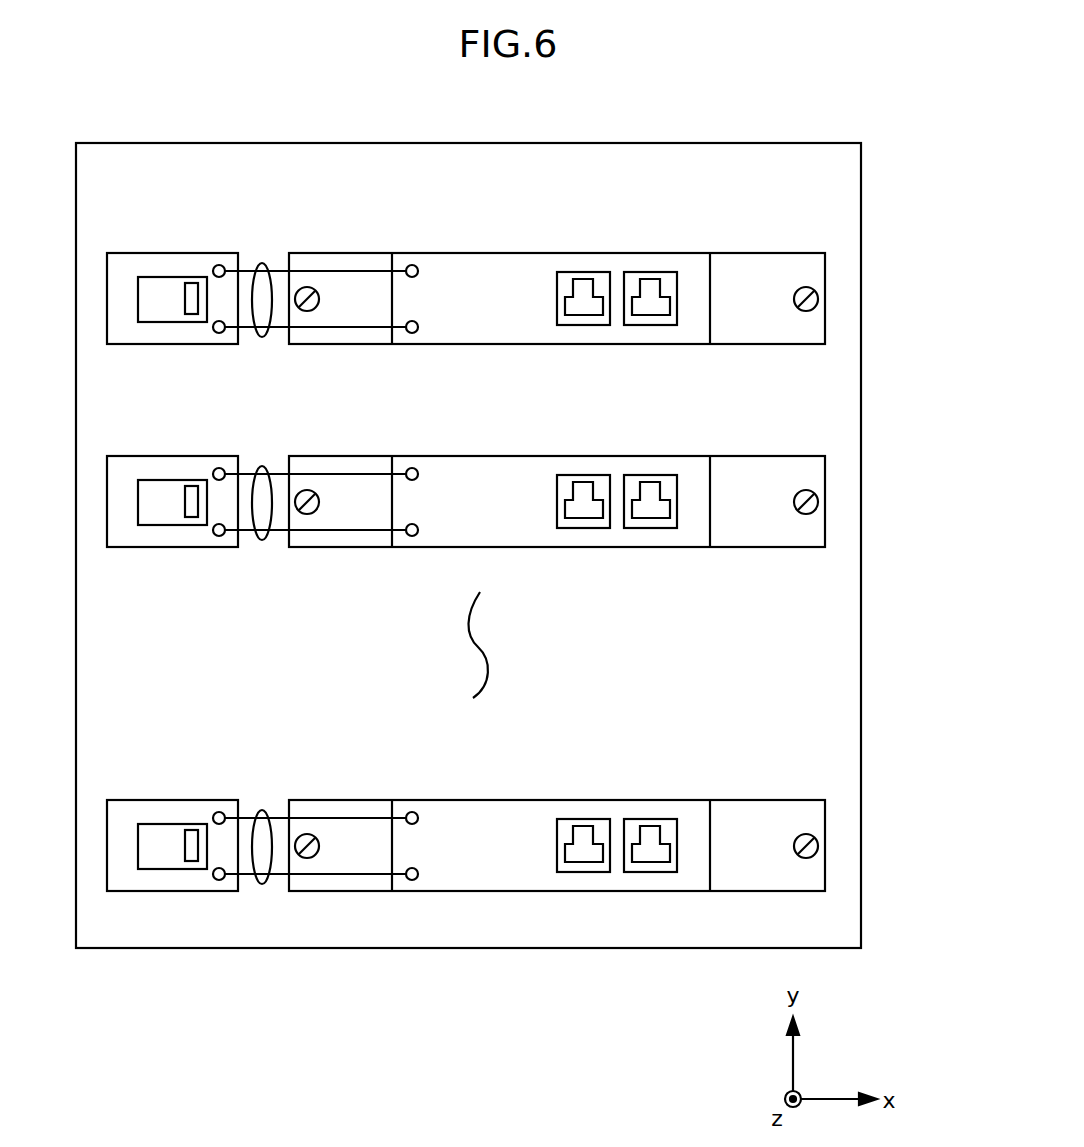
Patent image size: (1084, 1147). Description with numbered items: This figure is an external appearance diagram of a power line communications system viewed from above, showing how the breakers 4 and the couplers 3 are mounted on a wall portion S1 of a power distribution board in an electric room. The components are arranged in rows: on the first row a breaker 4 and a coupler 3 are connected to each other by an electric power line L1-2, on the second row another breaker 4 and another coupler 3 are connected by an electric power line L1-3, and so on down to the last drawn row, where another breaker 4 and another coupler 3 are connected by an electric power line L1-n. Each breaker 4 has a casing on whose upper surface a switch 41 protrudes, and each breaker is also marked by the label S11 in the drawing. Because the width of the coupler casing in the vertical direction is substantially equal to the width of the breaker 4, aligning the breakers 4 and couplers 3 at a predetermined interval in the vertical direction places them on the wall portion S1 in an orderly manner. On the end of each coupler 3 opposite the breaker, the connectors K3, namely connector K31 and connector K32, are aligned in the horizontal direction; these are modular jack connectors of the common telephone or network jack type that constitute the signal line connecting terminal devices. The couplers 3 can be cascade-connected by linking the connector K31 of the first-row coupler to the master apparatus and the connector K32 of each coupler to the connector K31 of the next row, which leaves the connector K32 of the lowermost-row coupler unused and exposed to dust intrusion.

The breaker 4 is at (132, 253).
The switch 41 is at (195, 283).
The electric power line L1-2 is at (262, 263).
The electric power line L1-3 is at (262, 466).
The electric power line L1-n is at (262, 810).
The coupler 3 is at (495, 253).
The connectors K3 is at (562, 205).
The connector K31 is at (578, 272).
The connector K32 is at (643, 272).
The breaker S11 is at (120, 328).
The wall portion S1 is at (838, 631).